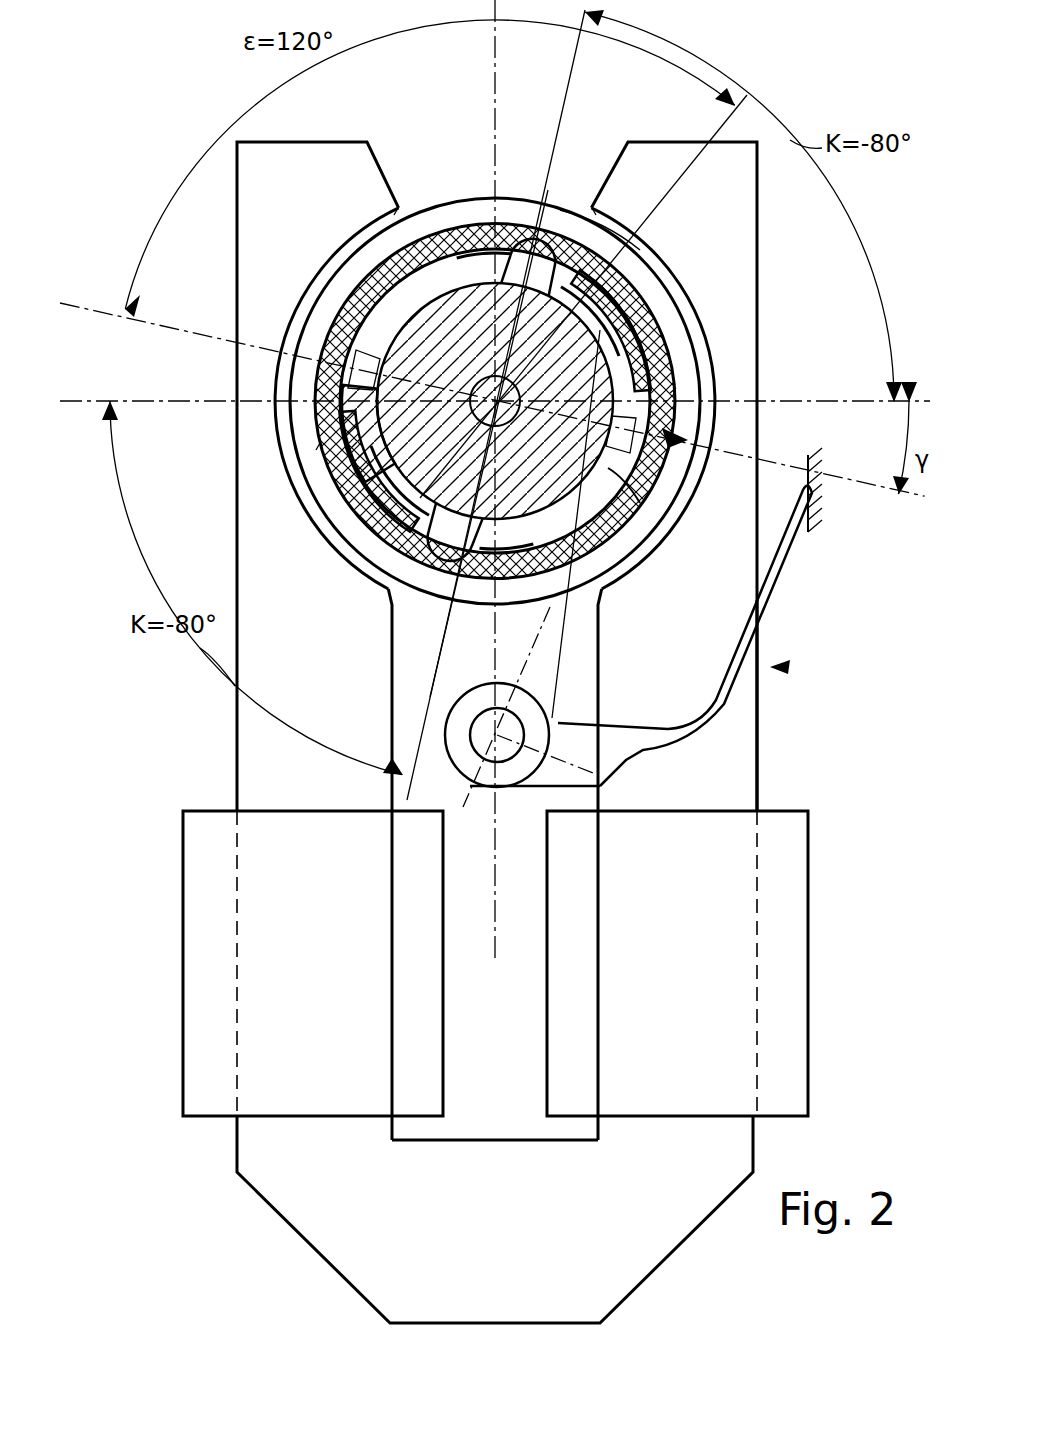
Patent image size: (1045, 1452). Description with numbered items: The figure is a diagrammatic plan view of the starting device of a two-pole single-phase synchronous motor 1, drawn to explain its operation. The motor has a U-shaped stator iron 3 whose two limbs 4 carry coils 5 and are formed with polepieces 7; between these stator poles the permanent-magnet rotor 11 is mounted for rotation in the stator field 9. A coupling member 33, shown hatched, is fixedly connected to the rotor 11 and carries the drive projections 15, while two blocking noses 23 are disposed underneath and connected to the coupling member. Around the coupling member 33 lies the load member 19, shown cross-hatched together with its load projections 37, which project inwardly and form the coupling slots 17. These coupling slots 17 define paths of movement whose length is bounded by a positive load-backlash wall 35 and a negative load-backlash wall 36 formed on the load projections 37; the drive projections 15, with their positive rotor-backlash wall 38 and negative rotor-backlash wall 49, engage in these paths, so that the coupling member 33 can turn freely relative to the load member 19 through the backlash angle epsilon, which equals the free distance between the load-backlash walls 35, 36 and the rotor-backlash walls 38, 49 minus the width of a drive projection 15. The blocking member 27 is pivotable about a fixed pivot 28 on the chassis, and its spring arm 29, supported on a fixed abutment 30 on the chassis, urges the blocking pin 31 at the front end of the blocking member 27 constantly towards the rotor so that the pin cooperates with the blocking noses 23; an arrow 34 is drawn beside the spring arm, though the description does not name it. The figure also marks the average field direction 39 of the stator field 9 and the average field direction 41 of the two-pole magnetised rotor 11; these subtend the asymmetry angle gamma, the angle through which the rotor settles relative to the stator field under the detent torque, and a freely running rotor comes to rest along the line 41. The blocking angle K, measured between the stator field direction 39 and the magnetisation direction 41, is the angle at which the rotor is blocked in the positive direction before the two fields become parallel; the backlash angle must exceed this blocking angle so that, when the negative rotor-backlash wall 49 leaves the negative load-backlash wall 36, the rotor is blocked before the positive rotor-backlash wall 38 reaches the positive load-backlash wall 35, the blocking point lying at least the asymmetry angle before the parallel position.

The single-phase synchronous motor 1 is at (762, 806).
The stator iron 3 is at (620, 1258).
The limbs 4 is at (740, 738).
The coils 5 is at (790, 932).
The polepieces 7 is at (237, 262).
The stator field 9 is at (705, 343).
The permanent-magnet rotor 11 is at (418, 222).
The drive projections 15 is at (670, 393).
The coupling slots 17 is at (378, 268).
The load member 19 is at (352, 296).
The blocking noses 23 is at (500, 187).
The blocking member 27 is at (563, 722).
The fixed pivot 28 is at (480, 712).
The spring arm 29 is at (767, 598).
The fixed abutment 30 is at (810, 500).
The blocking pin 31 is at (617, 490).
The coupling member 33 is at (450, 238).
The direction arrow 34 is at (785, 667).
The positive load-backlash wall 35 is at (606, 191).
The negative load-backlash wall 36 is at (670, 357).
The negative rotor-backlash wall 49 is at (615, 330).
The load projections 37 is at (625, 290).
The positive rotor-backlash wall 38 is at (345, 245).
The average field direction of the stator field 39 is at (770, 401).
The average field direction of the rotor 41 is at (291, 316).